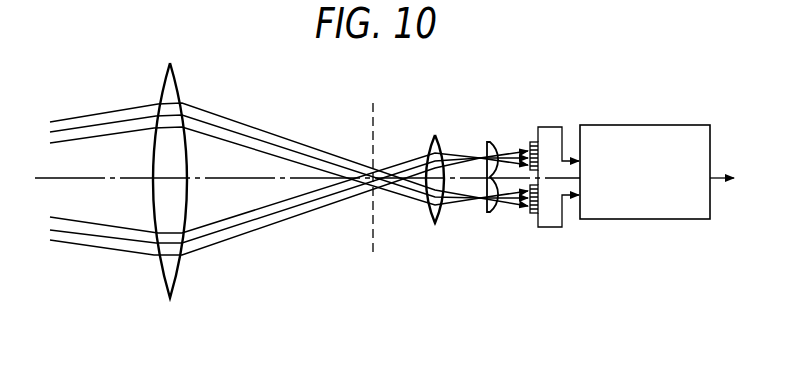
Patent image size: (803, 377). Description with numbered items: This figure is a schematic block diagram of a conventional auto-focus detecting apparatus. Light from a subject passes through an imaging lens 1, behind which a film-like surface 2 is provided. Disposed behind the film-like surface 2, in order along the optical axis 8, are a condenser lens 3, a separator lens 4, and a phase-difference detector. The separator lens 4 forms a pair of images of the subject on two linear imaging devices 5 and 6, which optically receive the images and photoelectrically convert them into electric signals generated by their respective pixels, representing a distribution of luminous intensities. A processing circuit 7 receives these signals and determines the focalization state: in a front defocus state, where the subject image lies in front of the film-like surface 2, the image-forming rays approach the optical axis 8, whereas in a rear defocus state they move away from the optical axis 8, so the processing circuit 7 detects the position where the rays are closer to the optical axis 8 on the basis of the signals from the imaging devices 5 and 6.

The imaging lens 1 is at (178, 85).
The film-like surface 2 is at (383, 113).
The condenser lens 3 is at (433, 223).
The separator lens 4 is at (495, 213).
The linear imaging device 5 is at (528, 141).
The linear imaging device 6 is at (530, 214).
The processing circuit 7 is at (647, 125).
The optical axis 8 is at (112, 177).